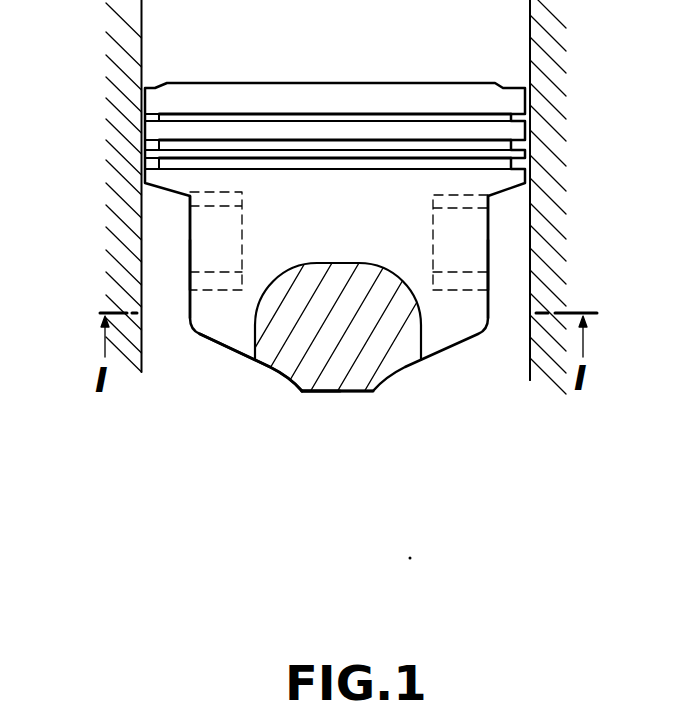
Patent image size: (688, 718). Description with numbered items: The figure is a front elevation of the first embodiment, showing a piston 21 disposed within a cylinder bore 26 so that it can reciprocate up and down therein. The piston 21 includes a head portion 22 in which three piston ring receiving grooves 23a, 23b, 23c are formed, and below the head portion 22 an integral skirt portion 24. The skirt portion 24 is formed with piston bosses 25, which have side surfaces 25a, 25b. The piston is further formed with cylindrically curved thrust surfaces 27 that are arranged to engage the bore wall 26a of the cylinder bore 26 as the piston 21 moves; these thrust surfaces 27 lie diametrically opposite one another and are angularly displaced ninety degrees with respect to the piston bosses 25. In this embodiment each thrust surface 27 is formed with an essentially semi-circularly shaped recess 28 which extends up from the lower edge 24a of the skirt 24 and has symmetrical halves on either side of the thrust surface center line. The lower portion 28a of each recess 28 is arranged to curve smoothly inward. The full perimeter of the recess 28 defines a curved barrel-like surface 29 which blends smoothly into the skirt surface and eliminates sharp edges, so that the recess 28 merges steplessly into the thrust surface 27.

The piston 21 is at (502, 217).
The head portion 22 is at (377, 103).
The piston ring receiving groove 23a is at (141, 117).
The piston ring receiving groove 23b is at (141, 141).
The piston ring receiving groove 23c is at (141, 162).
The skirt portion 24 is at (223, 242).
The lower edge of the skirt 24a is at (347, 392).
The piston boss 25 is at (195, 225).
The side surface of piston boss 25a is at (190, 265).
The side surface of piston boss 25b is at (490, 262).
The cylinder bore 26 is at (543, 78).
The bore wall 26a is at (530, 348).
The thrust surface 27 is at (297, 228).
The recess 28 is at (283, 335).
The lower portion of the recess 28a is at (322, 383).
The barrel-like surface 29 is at (360, 266).